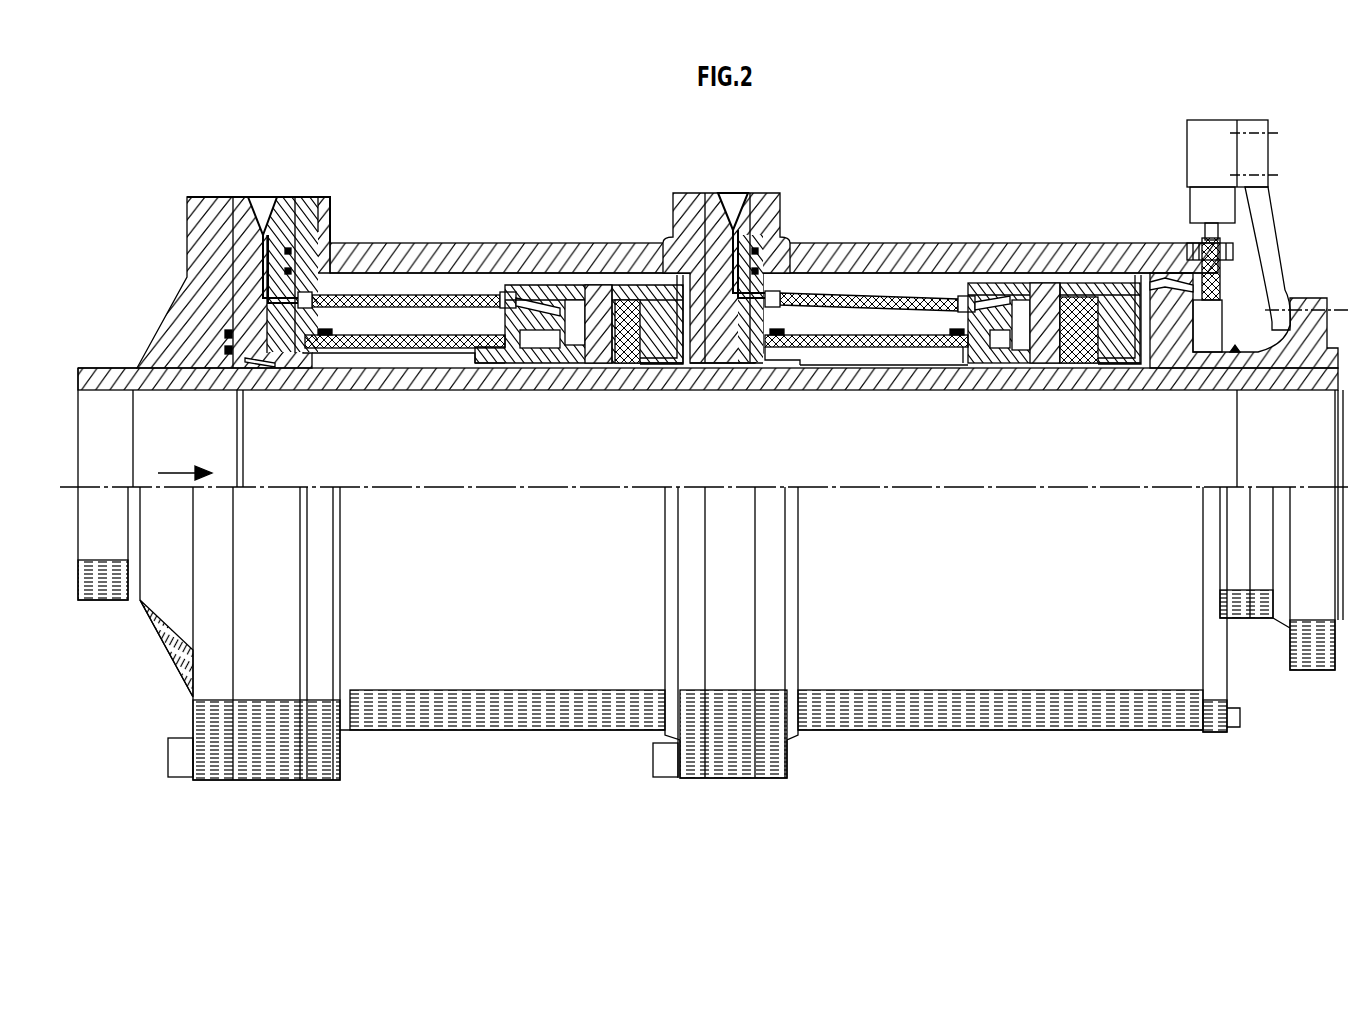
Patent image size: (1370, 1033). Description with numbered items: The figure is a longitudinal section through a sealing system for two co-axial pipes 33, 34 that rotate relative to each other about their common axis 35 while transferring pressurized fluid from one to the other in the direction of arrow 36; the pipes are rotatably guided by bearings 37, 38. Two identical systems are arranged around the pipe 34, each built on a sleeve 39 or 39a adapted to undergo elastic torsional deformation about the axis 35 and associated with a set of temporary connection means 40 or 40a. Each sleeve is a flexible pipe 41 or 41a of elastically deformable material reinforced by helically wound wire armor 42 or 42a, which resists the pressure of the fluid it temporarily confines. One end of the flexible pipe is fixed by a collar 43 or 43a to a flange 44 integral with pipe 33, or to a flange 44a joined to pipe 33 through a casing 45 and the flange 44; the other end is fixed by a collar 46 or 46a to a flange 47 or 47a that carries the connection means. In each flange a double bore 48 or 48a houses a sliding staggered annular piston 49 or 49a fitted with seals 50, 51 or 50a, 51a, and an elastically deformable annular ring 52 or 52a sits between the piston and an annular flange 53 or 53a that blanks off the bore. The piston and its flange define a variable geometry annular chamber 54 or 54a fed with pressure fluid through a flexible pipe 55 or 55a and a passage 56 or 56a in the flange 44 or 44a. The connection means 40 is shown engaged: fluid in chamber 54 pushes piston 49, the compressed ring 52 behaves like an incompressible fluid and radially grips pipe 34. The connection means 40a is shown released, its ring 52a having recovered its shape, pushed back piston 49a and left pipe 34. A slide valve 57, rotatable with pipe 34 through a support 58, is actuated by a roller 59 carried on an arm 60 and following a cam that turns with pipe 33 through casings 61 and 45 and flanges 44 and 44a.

The pipe 33 is at (96, 378).
The pipe 34 is at (897, 378).
The common axis 35 is at (471, 487).
The arrow 36 is at (185, 461).
The bearing 37 is at (258, 392).
The bearing 38 is at (1163, 278).
The sleeve 39 is at (378, 392).
The sleeve 39a is at (833, 392).
The temporary connection means 40 is at (632, 368).
The temporary connection means 40a is at (1093, 362).
The flexible pipe 41 is at (350, 348).
The flexible pipe 41a is at (808, 348).
The helically wound wire armor 42 is at (404, 350).
The helically wound wire armor 42a is at (868, 358).
The collar 43 is at (320, 195).
The collar 43a is at (793, 300).
The flange 44 is at (188, 208).
The flange 44a is at (702, 195).
The casing 45 is at (383, 262).
The collar 46 is at (480, 322).
The collar 46a is at (943, 294).
The flange 47 is at (520, 290).
The flange 47a is at (1003, 292).
The double bore 48 is at (574, 364).
The double bore 48a is at (1047, 352).
The staggered annular piston 49 is at (611, 292).
The staggered annular piston 49a is at (1003, 352).
The seal 50 is at (552, 292).
The seal 50a is at (998, 289).
The seal 51 is at (595, 292).
The seal 51a is at (1058, 294).
The annular ring 52 is at (634, 367).
The annular ring 52a is at (1090, 364).
The annular flange 53 is at (672, 364).
The annular flange 53a is at (1137, 365).
The annular chamber 54 is at (573, 292).
The annular chamber 54a is at (1030, 294).
The flexible pipe 55 is at (360, 296).
The flexible pipe 55a is at (847, 294).
The passage 56 is at (255, 242).
The passage 56a is at (782, 193).
The slide valve 57 is at (1198, 145).
The support 58 is at (1257, 160).
The roller 59 is at (1207, 232).
The support arm 60 is at (1292, 310).
The casing 61 is at (890, 255).